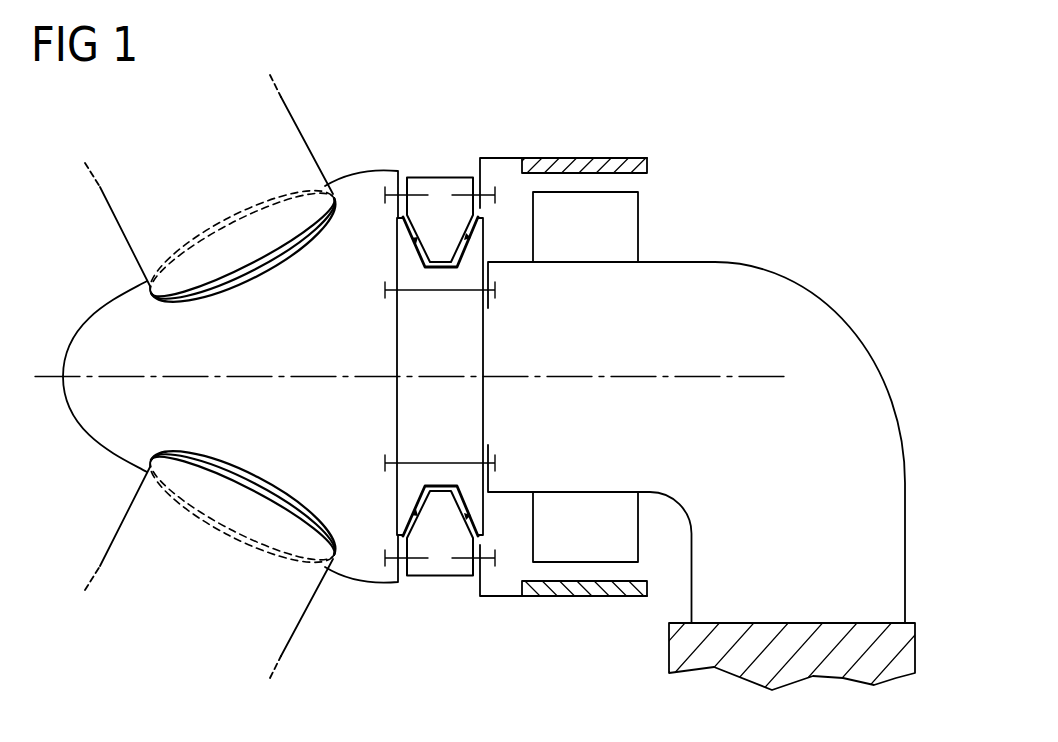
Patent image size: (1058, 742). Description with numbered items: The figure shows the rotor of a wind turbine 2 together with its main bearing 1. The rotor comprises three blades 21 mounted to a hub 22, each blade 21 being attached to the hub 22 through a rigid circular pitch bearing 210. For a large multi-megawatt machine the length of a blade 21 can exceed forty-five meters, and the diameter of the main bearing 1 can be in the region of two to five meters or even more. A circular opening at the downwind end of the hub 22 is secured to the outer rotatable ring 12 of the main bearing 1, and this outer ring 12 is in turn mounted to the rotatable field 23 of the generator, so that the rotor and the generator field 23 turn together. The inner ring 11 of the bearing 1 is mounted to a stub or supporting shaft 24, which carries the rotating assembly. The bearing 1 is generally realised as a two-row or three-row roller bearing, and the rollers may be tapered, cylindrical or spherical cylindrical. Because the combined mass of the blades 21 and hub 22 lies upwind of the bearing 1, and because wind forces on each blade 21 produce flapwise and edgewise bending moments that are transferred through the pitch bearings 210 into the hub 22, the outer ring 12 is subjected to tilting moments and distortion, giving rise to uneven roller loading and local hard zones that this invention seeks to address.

The main bearing 1 is at (455, 153).
The wind turbine 2 is at (720, 181).
The inner ring 11 is at (469, 416).
The outer rotatable ring 12 is at (442, 565).
The blade 21 is at (127, 212).
The hub 22 is at (122, 445).
The rotatable field 23 is at (587, 167).
The stub or supporting shaft 24 is at (856, 352).
The pitch bearing 210 is at (260, 273).